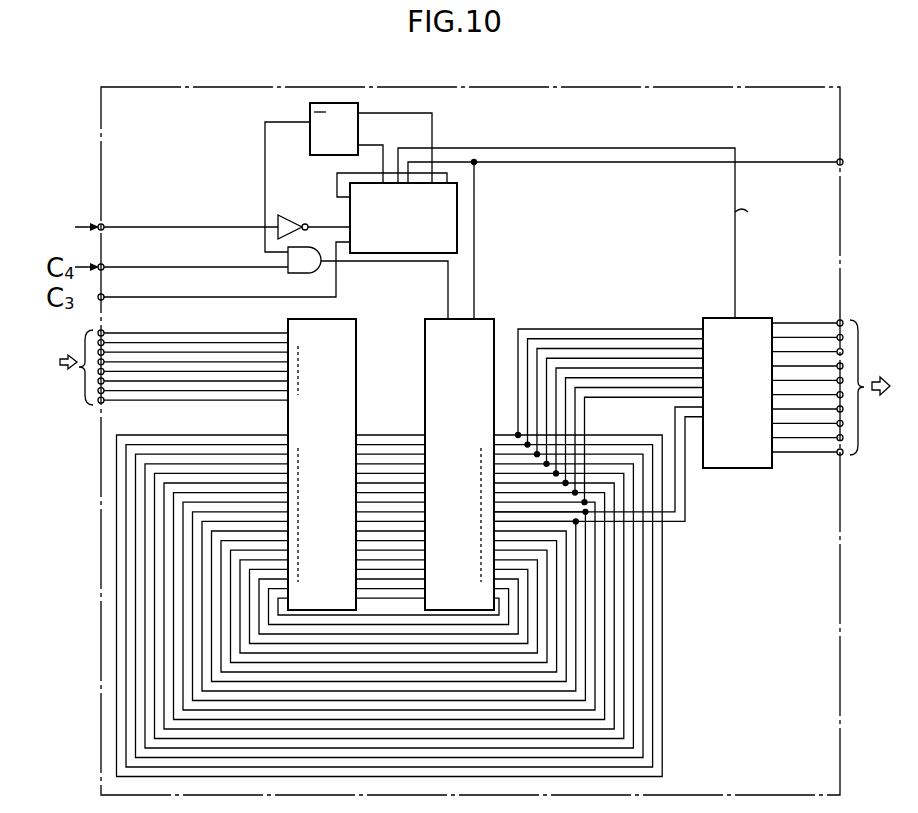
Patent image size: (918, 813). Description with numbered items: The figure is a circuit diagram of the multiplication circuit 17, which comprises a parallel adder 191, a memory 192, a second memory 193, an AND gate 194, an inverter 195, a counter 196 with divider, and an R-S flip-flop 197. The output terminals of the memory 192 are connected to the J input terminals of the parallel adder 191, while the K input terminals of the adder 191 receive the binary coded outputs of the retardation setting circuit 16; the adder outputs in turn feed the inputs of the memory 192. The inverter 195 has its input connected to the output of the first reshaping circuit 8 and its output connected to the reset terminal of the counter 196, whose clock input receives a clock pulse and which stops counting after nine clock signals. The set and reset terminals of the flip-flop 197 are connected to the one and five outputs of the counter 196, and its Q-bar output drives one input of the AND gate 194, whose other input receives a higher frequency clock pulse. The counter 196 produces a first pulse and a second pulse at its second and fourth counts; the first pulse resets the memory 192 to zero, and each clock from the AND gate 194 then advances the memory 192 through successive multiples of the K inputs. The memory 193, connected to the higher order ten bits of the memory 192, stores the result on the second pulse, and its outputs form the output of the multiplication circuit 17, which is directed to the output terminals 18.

The first reshaping circuit 8 is at (164, 230).
The retardation setting circuit 16 is at (159, 367).
The multiplication circuit 17 is at (680, 87).
The output terminals 18 is at (842, 387).
The parallel adder 191 is at (337, 306).
The memory 192 is at (488, 306).
The memory 193 is at (760, 306).
The AND gate 194 is at (294, 275).
The inverter 195 is at (298, 215).
The counter with divider 196 is at (420, 253).
The R-S flip-flop 197 is at (348, 103).